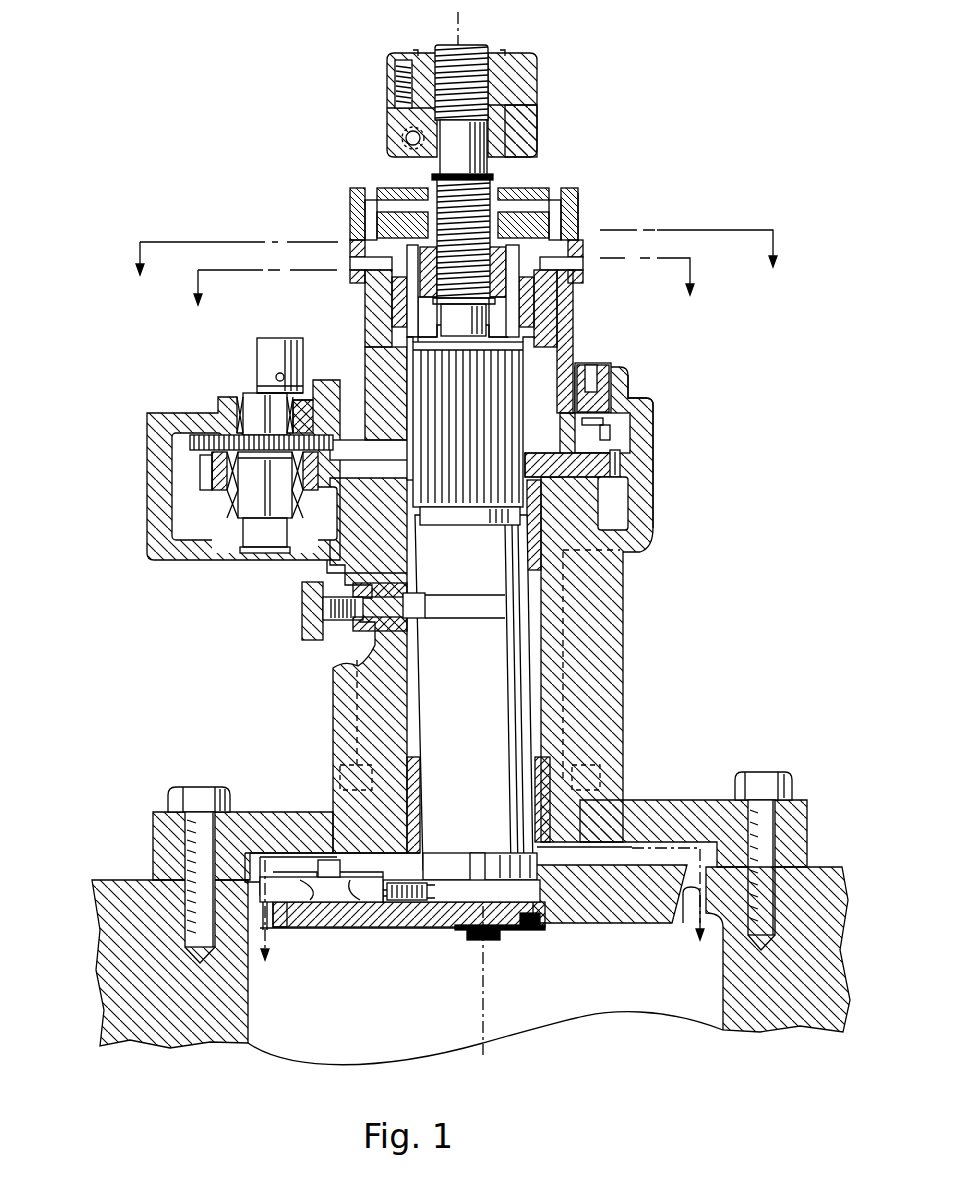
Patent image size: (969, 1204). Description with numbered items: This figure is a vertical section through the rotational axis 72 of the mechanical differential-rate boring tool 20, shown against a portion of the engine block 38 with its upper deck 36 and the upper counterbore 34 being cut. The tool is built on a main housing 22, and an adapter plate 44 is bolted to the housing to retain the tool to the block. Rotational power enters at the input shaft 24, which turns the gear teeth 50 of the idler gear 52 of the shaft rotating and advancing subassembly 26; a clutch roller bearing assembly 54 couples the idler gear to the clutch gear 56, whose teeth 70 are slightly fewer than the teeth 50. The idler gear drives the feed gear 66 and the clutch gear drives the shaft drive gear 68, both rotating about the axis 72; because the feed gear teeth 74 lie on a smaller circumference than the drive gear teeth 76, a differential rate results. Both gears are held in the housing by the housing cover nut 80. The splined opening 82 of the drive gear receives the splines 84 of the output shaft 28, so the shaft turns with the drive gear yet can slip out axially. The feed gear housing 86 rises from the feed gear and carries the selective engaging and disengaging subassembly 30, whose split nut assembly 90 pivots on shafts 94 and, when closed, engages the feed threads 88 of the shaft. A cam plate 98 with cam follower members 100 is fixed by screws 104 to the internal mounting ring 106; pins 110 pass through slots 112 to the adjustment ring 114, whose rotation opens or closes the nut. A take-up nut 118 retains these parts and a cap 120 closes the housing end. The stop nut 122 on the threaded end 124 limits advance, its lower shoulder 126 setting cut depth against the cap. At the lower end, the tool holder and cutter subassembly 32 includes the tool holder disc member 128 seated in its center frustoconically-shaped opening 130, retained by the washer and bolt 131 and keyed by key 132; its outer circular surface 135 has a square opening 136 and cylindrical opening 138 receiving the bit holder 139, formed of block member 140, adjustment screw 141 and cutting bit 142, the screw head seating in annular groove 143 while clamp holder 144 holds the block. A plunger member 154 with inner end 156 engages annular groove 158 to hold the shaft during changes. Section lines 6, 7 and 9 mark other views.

The section line 6- 6 is at (457, 266).
The section line 7- 7 is at (445, 291).
The section line 9- 9 is at (483, 918).
The mechanical differential-rate boring tool 20 is at (670, 389).
The main housing 22 is at (160, 565).
The input shaft 24 is at (245, 384).
The shaft rotating and advancing subassembly 26 is at (320, 355).
The output shaft 28 is at (455, 152).
The selective engaging and disengaging subassembly 30 is at (365, 207).
The tool holder and cutter subassembly 32 is at (560, 928).
The upper counterbore 34 is at (686, 920).
The upper deck 36 is at (108, 880).
The engine block 38 is at (723, 1025).
The adapter plate 44 is at (705, 800).
The gear teeth 50 is at (185, 457).
The idler gear 52 is at (270, 487).
The clutch roller bearing assembly 54 is at (228, 505).
The clutch gear 56 is at (212, 478).
The feed gear 66 is at (630, 430).
The shaft drive gear 68 is at (345, 505).
The teeth 70 is at (200, 470).
The rotational axis 72 is at (458, 28).
The teeth 74 is at (612, 442).
The teeth 76 is at (622, 463).
The housing cover nut 80 is at (606, 366).
The splined opening 82 is at (507, 520).
The splines 84 is at (512, 370).
The feed gear housing 86 is at (578, 205).
The feed threads 88 is at (490, 195).
The split nut assembly 90 is at (585, 232).
The shaft 94 is at (624, 216).
The cam plate 98 is at (390, 290).
The cam follower members 100 is at (362, 232).
The screws 104 is at (392, 306).
The internal mounting ring 106 is at (378, 320).
The pins 110 is at (350, 276).
The slots 112 is at (583, 253).
The adjustment ring 114 is at (350, 247).
The take-up nut 118 is at (545, 213).
The cap 120 is at (390, 195).
The stop nut 122 is at (537, 62).
The threaded end 124 is at (478, 50).
The lower shoulder 126 is at (525, 150).
The tool holder disc member 128 is at (407, 922).
The center frustoconically-shaped opening 130 is at (583, 924).
The washer and bolt 131 is at (503, 936).
The key 132 is at (478, 856).
The outer circular surface 135 is at (680, 877).
The square opening 136 is at (353, 922).
The cylindrical opening 138 is at (350, 918).
The bit holder 139 is at (293, 868).
The block member 140 is at (300, 895).
The adjustment screw 141 is at (403, 923).
The cutting bit 142 is at (283, 945).
The annular groove 143 is at (422, 912).
The clamp holder 144 is at (327, 850).
The plunger member 154 is at (303, 607).
The inner end 156 is at (418, 600).
The annular groove 158 is at (476, 614).